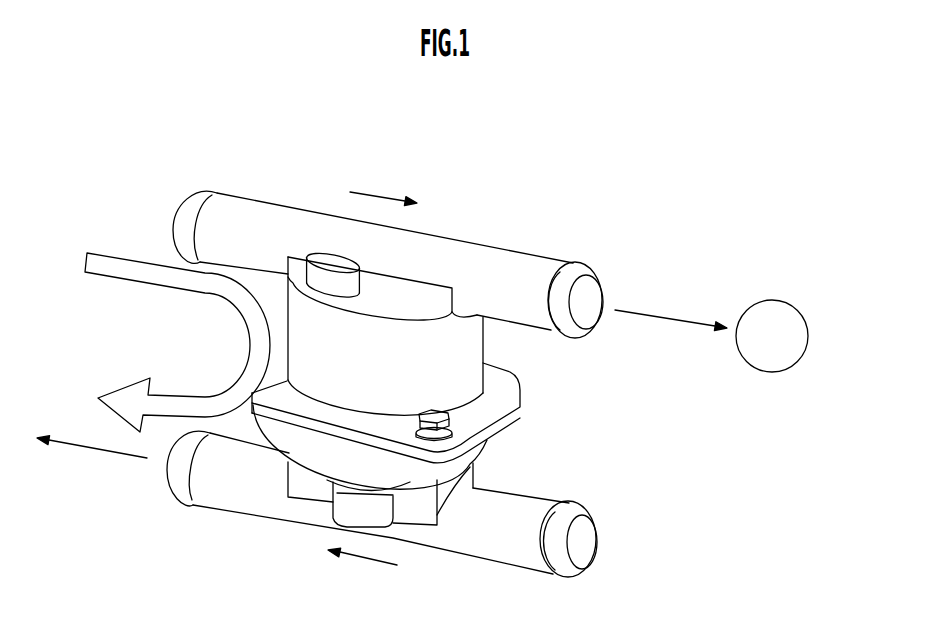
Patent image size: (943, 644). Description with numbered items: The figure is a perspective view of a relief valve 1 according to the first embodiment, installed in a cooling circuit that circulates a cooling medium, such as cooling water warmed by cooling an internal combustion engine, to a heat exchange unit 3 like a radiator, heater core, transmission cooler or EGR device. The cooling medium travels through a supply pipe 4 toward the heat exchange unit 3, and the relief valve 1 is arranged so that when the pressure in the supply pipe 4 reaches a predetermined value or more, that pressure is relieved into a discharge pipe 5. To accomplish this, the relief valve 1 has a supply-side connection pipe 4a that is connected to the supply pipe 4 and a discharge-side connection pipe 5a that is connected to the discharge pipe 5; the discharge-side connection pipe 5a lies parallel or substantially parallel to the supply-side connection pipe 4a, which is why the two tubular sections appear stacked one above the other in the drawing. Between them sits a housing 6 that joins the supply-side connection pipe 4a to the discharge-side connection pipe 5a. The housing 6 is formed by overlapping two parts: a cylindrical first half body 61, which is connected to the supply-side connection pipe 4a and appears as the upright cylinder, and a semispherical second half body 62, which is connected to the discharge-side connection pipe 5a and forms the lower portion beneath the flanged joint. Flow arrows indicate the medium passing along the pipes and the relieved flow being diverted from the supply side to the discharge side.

The relief valve 1 is at (525, 213).
The heat exchange unit 3 is at (773, 298).
The supply pipe 4 is at (662, 318).
The supply-side connection pipe 4a is at (287, 223).
The discharge pipe 5 is at (96, 452).
The discharge-side connection pipe 5a is at (233, 497).
The housing 6 is at (542, 401).
The first half body 61 is at (457, 352).
The second half body 62 is at (476, 467).